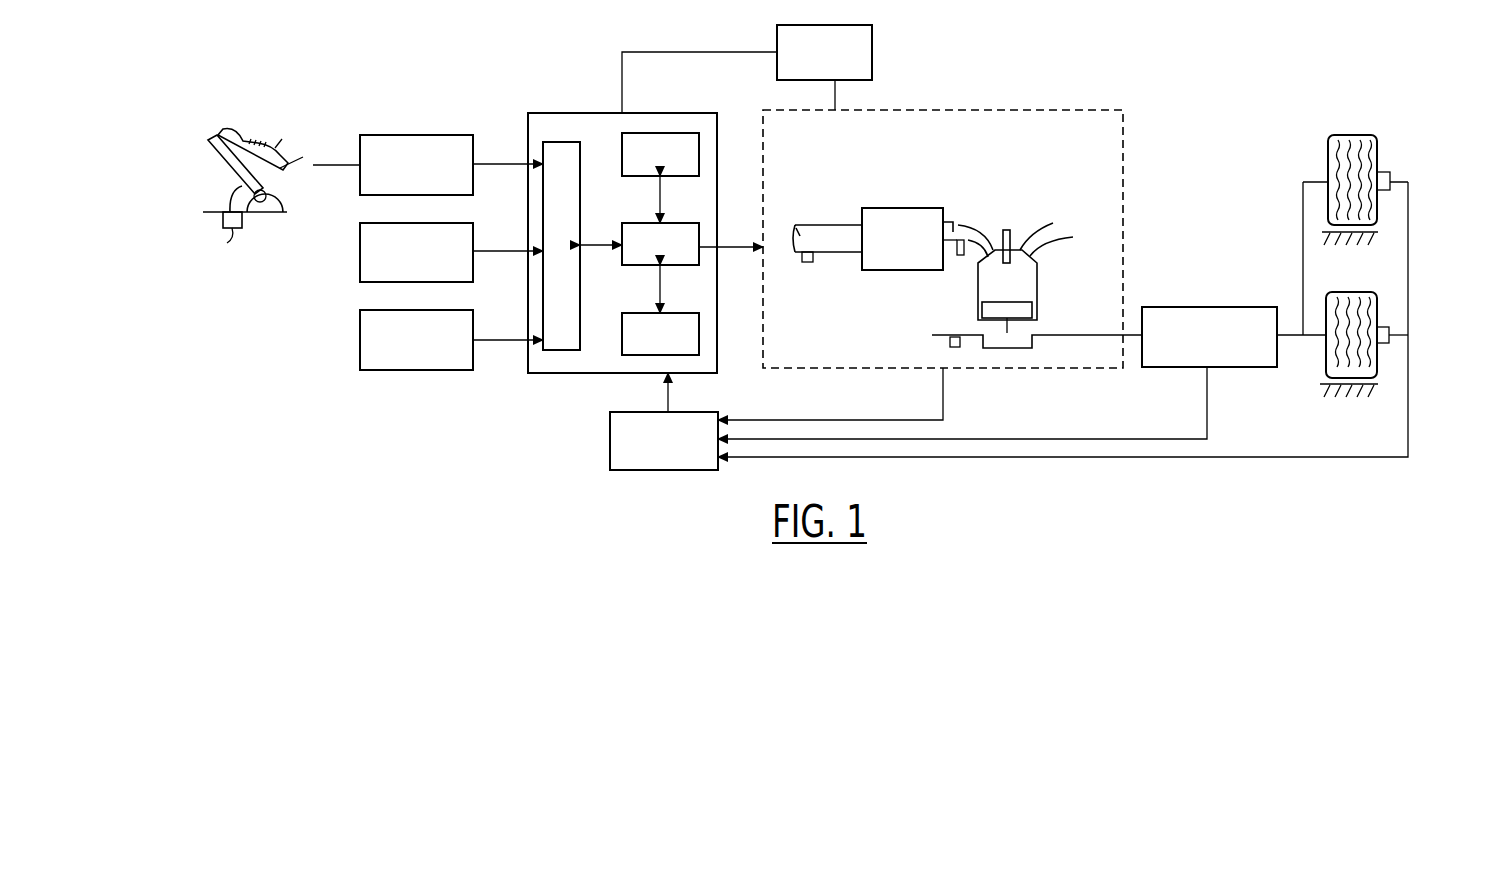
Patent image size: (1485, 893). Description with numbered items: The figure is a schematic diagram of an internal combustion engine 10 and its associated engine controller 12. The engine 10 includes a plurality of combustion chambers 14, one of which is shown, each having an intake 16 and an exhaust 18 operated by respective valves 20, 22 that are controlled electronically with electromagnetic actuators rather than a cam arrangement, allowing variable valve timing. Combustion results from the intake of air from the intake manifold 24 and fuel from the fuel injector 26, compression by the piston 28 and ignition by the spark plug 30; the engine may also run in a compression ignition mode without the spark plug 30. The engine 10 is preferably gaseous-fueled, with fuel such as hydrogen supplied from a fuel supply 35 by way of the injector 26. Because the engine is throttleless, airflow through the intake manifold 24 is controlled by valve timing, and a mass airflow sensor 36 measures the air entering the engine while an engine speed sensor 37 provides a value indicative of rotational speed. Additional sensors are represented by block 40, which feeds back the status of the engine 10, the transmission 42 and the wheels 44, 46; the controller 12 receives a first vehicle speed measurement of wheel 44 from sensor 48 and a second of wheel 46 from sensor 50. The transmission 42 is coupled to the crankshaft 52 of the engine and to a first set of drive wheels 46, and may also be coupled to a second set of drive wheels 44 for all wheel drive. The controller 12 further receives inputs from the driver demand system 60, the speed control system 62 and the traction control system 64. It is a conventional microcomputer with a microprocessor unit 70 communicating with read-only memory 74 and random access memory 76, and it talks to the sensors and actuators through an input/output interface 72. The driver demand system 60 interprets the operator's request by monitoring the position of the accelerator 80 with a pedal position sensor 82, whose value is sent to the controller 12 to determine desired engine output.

The internal combustion engine 10 is at (1125, 123).
The engine controller 12 is at (626, 243).
The combustion chamber 14 is at (1038, 285).
The intake 16 is at (952, 222).
The exhaust manifold 18 is at (1068, 228).
The intake valve 20 is at (977, 242).
The exhaust valve 22 is at (1053, 222).
The intake manifold 24 is at (895, 206).
The fuel injector 26 is at (960, 255).
The piston 28 is at (1030, 310).
The spark plug 30 is at (1017, 225).
The fuel supply 35 is at (813, 80).
The mass airflow sensor 36 is at (807, 262).
The engine speed sensor 37 is at (960, 347).
The sensors 40 is at (610, 440).
The transmission 42 is at (1200, 307).
The wheel 44 is at (1328, 152).
The wheel 46 is at (1350, 292).
The sensor 48 is at (1383, 172).
The sensor 50 is at (1383, 327).
The crankshaft 52 is at (1082, 337).
The driver demand system 60 is at (400, 135).
The speed control system 62 is at (360, 251).
The traction control system 64 is at (360, 338).
The microprocessor unit 70 is at (699, 236).
The input/output interface 72 is at (565, 351).
The read-only memory 74 is at (699, 328).
The random access memory 76 is at (699, 150).
The accelerator 80 is at (227, 190).
The pedal position sensor 82 is at (227, 243).